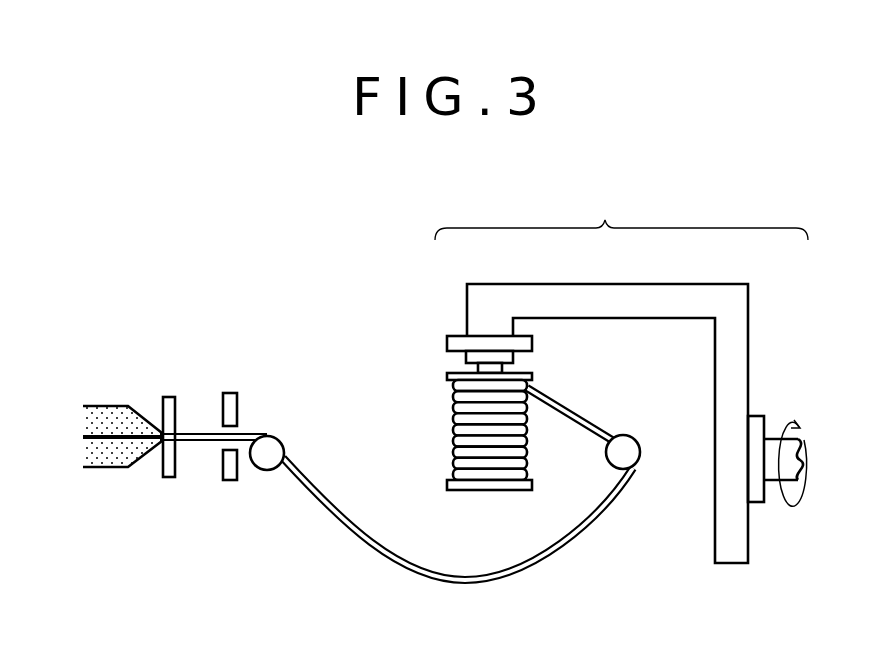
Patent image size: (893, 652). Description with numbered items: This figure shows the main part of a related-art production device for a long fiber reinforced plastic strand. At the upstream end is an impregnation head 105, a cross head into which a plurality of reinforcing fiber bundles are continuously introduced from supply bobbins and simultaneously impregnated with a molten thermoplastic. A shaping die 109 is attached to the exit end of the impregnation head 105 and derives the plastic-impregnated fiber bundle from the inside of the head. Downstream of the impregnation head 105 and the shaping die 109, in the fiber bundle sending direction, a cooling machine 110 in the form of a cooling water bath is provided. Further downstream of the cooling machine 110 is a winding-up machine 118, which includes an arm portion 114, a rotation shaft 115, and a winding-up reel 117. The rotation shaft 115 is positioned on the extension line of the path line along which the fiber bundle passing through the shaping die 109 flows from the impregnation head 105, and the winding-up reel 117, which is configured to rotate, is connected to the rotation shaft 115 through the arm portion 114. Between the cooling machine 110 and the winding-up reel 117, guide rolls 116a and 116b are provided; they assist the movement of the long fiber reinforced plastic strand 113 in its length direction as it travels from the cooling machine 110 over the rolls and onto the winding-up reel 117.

The impregnation head 105 is at (113, 403).
The shaping die 109 is at (168, 399).
The cooling machine 110 is at (232, 400).
The long fiber reinforced plastic strand 113 is at (302, 468).
The arm portion 114 is at (653, 297).
The rotation shaft 115 is at (774, 432).
The guide roll 116a is at (262, 459).
The guide roll 116b is at (627, 443).
The winding-up reel 117 is at (450, 372).
The winding-up machine 118 is at (589, 377).